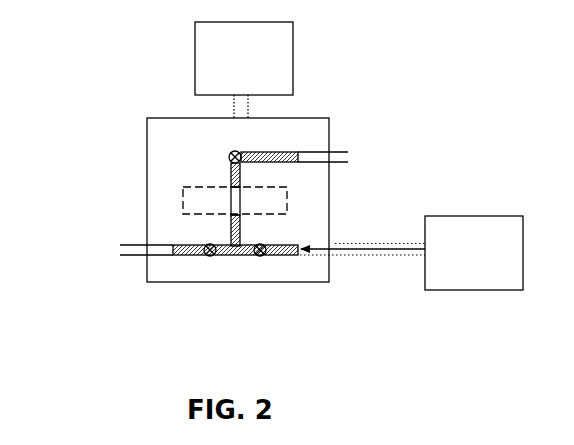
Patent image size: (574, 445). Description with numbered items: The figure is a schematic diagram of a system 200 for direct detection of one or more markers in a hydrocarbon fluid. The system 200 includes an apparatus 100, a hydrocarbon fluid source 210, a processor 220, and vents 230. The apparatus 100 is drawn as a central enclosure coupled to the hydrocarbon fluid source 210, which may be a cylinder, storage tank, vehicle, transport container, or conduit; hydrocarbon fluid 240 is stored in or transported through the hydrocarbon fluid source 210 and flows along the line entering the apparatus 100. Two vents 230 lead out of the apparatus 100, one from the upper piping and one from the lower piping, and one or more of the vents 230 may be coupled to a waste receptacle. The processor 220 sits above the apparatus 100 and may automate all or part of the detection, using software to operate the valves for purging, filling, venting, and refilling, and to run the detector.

The system 200 is at (101, 87).
The processor 220 is at (244, 70).
The hydrocarbon fluid source 210 is at (474, 253).
The apparatus 100 is at (233, 200).
The vents 230 is at (359, 157).
The hydrocarbon fluid 240 is at (365, 251).